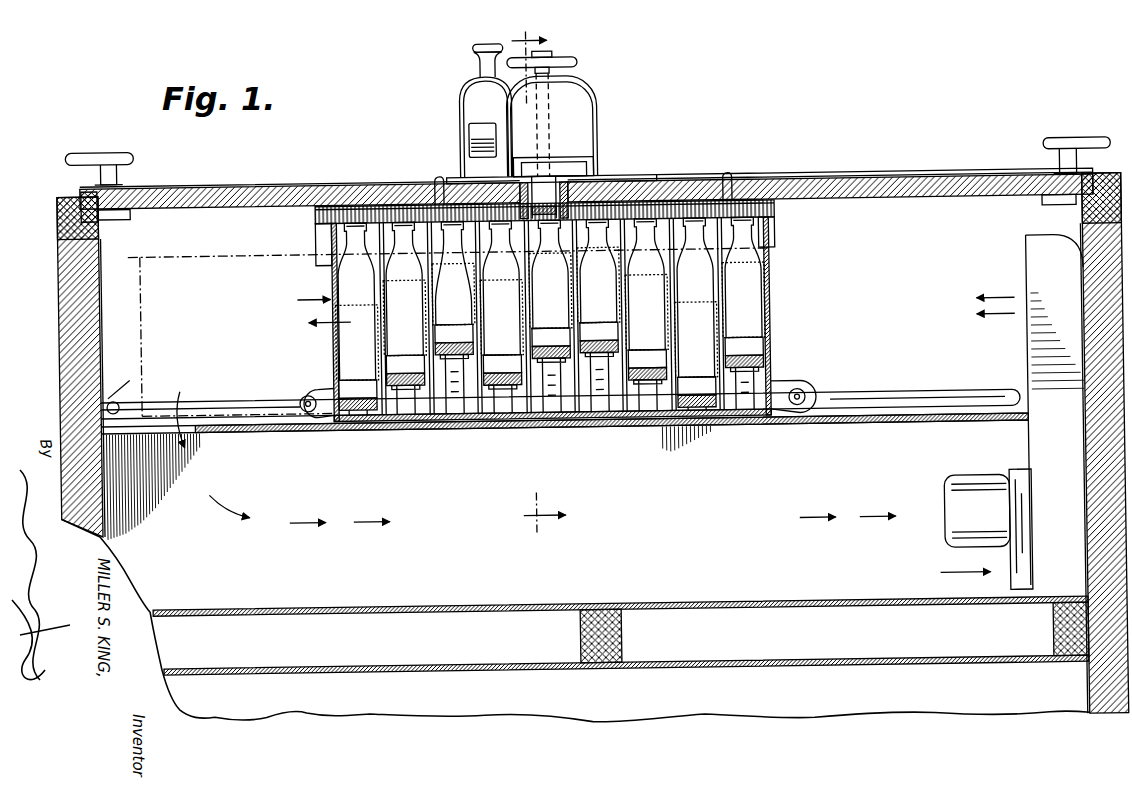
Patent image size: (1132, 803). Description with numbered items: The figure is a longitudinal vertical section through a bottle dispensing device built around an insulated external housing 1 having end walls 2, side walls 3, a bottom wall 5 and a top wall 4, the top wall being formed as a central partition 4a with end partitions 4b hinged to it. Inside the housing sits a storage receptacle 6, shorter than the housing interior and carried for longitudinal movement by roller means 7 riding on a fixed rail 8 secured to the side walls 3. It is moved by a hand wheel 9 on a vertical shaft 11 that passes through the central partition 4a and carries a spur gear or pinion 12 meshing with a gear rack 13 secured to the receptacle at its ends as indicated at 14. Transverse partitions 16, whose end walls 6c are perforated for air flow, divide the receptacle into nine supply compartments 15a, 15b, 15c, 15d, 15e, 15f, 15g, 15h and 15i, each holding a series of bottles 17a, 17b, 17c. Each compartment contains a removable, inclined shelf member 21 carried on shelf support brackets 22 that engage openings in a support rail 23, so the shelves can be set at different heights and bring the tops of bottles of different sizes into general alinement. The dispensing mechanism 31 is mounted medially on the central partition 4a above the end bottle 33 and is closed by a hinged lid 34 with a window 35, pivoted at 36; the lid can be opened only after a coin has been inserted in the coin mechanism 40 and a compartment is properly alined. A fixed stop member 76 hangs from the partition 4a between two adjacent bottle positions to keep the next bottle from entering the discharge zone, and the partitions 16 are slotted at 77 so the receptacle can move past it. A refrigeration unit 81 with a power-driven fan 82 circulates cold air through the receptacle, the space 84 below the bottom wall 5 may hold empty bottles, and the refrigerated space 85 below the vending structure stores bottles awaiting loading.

The external housing 1 is at (58, 264).
The end walls 2 is at (63, 312).
The side walls 3 is at (116, 340).
The top wall 4 is at (314, 177).
The central partition 4a is at (698, 174).
The end partitions 4b is at (240, 179).
The bottom wall 5 is at (496, 668).
The storage receptacle 6 is at (205, 251).
The end walls 6c is at (334, 280).
The roller means 7 is at (306, 392).
The fixed rail 8 is at (200, 400).
The hand wheel 9 is at (583, 58).
The shaft 11 is at (552, 130).
The spur gear or pinion 12 is at (560, 177).
The gear rack 13 is at (382, 201).
The rack securing points 14 is at (324, 238).
The supply compartment 15a is at (355, 409).
The supply compartment 15b is at (425, 408).
The supply compartment 15c is at (475, 410).
The supply compartment 15d is at (499, 408).
The supply compartment 15e is at (553, 410).
The supply compartment 15f is at (606, 410).
The supply compartment 15g is at (648, 410).
The supply compartment 15h is at (732, 410).
The supply compartment 15i is at (762, 378).
The partitions 16 is at (378, 336).
The bottle 17a is at (356, 302).
The bottle 17b is at (404, 289).
The bottle 17c is at (453, 273).
The shelf member 21 is at (355, 388).
The shelf support brackets 22 is at (492, 458).
The support rail 23 is at (750, 403).
The dispensing mechanism 31 is at (603, 94).
The end bottle 33 is at (580, 310).
The hinged lid 34 is at (579, 162).
The window 35 is at (538, 177).
The lid pivot 36 is at (589, 168).
The coin mechanism 40 is at (470, 98).
The stop member 76 is at (552, 276).
The slots 77 is at (646, 285).
The refrigeration unit 81 is at (1057, 409).
The fan 82 is at (990, 482).
The space below bottom wall 84 is at (592, 722).
The space below vending structure 85 is at (597, 573).